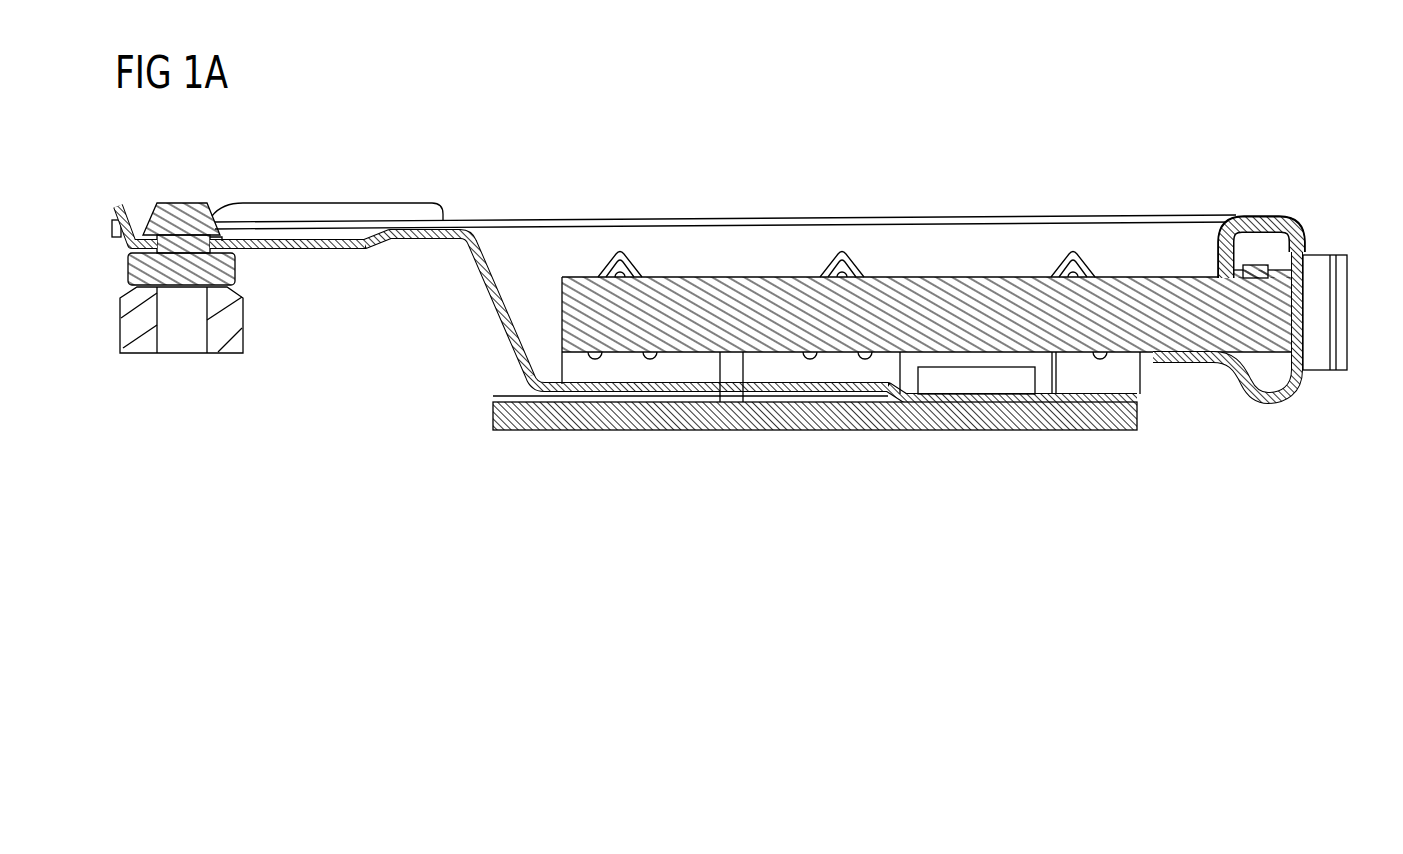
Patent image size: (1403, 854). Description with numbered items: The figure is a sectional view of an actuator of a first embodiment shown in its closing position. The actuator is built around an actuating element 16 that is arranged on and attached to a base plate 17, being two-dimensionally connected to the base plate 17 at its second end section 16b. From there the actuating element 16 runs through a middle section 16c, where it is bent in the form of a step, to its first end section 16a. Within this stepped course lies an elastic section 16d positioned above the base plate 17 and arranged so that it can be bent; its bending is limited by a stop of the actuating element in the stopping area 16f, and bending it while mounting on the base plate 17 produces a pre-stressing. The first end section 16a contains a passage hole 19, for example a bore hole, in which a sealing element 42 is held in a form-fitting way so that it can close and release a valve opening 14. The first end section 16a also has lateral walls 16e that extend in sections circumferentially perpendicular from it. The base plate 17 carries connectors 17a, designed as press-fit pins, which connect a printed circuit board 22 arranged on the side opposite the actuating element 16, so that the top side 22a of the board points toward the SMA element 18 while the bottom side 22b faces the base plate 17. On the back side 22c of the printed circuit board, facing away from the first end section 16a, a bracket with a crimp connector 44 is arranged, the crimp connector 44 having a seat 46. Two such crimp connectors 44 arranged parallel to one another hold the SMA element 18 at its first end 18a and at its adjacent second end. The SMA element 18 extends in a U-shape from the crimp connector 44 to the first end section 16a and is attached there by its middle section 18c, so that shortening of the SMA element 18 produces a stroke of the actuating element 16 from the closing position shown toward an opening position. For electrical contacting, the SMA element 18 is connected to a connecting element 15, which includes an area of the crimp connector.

The valve opening 14 is at (185, 320).
The connecting element 15 is at (1283, 219).
The actuating element 16 is at (503, 340).
The first end section of the actuating element 16a is at (305, 246).
The second end section of the actuating element 16b is at (1013, 402).
The middle section of the actuating element 16c is at (482, 281).
The elastic section 16d is at (707, 391).
The lateral walls 16e is at (410, 204).
The stopping area of the actuating element 16f is at (540, 392).
The base plate 17 is at (863, 418).
The connectors 17a is at (1073, 262).
The SMA element 18 is at (735, 218).
The first end of the SMA element 18a is at (1257, 216).
The middle section of the SMA element 18c is at (333, 221).
The passage hole 19 is at (252, 237).
The printed circuit board 22 is at (958, 312).
The top side of the printed circuit board 22a is at (1183, 275).
The bottom side of the printed circuit board 22b is at (1147, 360).
The back side of the printed circuit board 22c is at (1285, 326).
The sealing element 42 is at (183, 230).
The crimp connector 44 is at (1291, 235).
The seat 46 is at (1318, 254).